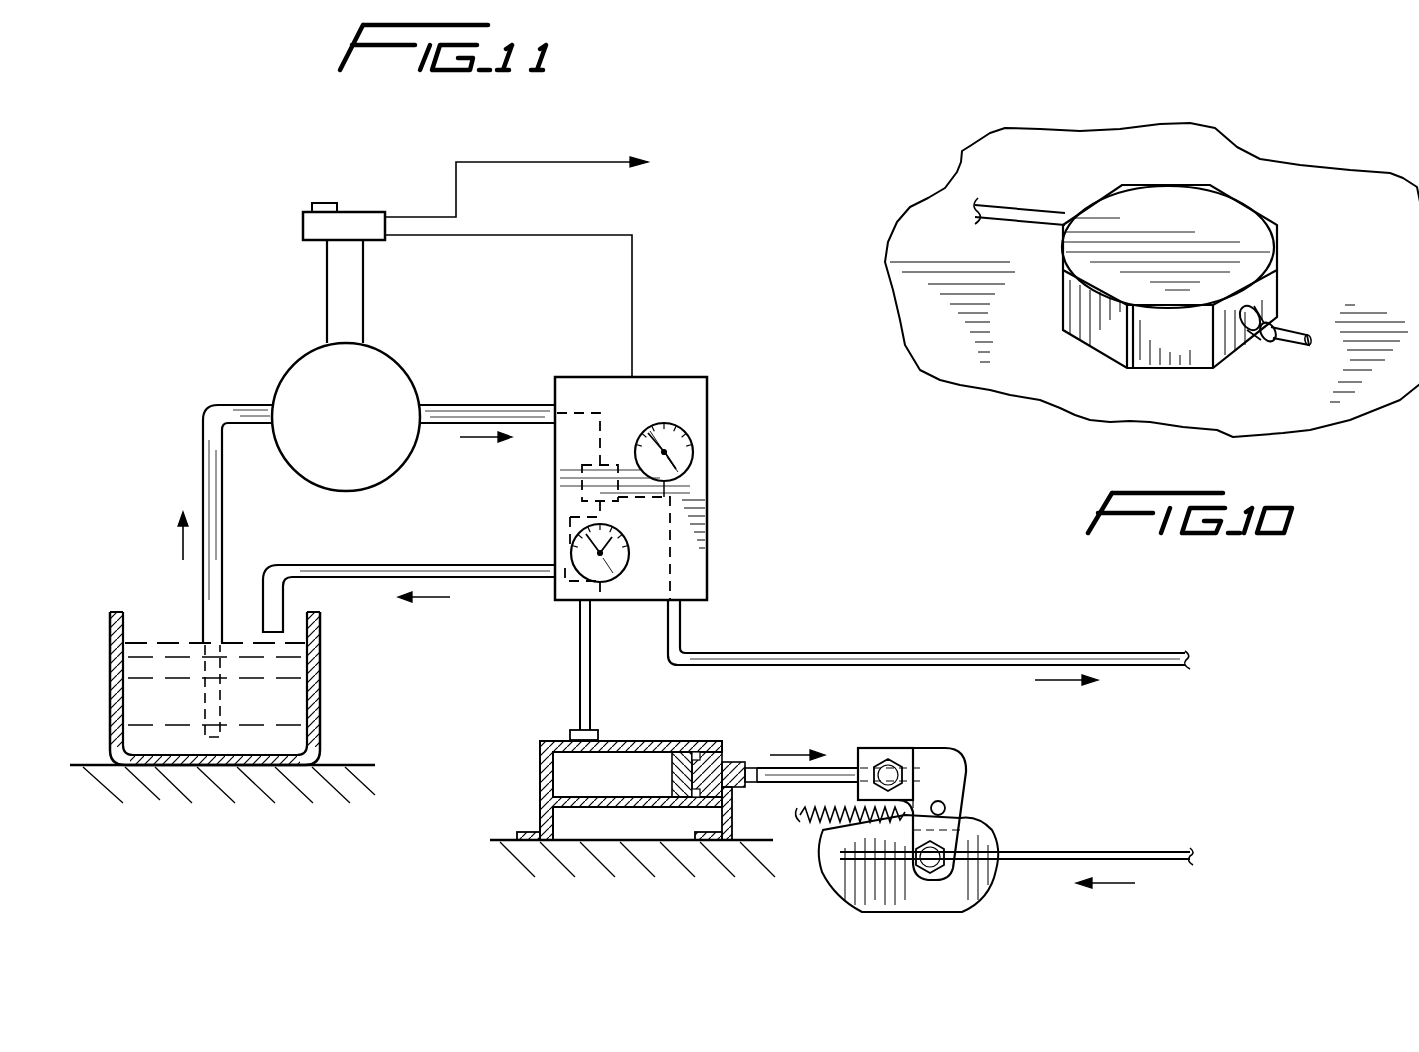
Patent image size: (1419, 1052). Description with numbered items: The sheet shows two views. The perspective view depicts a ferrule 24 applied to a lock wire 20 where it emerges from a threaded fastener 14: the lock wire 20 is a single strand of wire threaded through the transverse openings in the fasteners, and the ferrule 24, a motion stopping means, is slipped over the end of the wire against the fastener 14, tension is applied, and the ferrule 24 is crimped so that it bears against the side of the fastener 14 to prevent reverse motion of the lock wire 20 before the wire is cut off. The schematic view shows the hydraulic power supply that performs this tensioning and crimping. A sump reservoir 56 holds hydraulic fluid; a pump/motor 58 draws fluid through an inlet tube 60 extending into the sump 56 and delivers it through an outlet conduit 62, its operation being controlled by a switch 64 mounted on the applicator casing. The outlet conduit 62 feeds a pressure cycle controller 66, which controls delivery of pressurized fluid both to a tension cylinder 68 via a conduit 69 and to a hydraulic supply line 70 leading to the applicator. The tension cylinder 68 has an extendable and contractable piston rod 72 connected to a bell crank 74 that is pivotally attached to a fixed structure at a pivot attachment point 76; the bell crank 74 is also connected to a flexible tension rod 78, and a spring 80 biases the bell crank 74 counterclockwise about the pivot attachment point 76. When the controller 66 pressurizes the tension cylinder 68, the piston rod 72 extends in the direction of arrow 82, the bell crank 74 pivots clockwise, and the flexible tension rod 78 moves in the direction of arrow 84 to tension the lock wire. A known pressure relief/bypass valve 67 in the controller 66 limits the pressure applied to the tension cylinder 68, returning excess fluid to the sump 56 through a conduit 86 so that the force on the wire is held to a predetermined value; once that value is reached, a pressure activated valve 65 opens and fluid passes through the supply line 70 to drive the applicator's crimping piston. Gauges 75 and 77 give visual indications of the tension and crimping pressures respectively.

In FIG. 10, the threaded fastener 14 is at (1228, 215).
In FIG. 10, the lock wire 20 is at (1298, 347).
In FIG. 10, the ferrule 24 is at (1276, 322).
In FIG. 11, the sump reservoir 56 is at (315, 698).
In FIG. 11, the pump/motor 58 is at (300, 380).
In FIG. 11, the inlet tube 60 is at (210, 450).
In FIG. 11, the outlet conduit 62 is at (512, 405).
In FIG. 11, the switch 64 is at (306, 222).
In FIG. 11, the pressure activated valve 65 is at (560, 483).
In FIG. 11, the pressure cycle controller 66 is at (690, 397).
In FIG. 11, the pressure relief/bypass valve 67 is at (565, 582).
In FIG. 11, the tension cylinder 68 is at (549, 742).
In FIG. 11, the conduit 69 is at (624, 643).
In FIG. 11, the hydraulic supply line 70 is at (952, 655).
In FIG. 11, the piston rod 72 is at (788, 782).
In FIG. 11, the bell crank 74 is at (947, 748).
In FIG. 11, the gauge 75 is at (571, 541).
In FIG. 11, the pivot attachment point 76 is at (943, 804).
In FIG. 11, the gauge 77 is at (685, 458).
In FIG. 11, the flexible tension rod 78 is at (1133, 853).
In FIG. 11, the spring 80 is at (818, 826).
In FIG. 11, the arrow 82 is at (768, 745).
In FIG. 11, the arrow 84 is at (1106, 884).
In FIG. 11, the conduit 86 is at (383, 565).